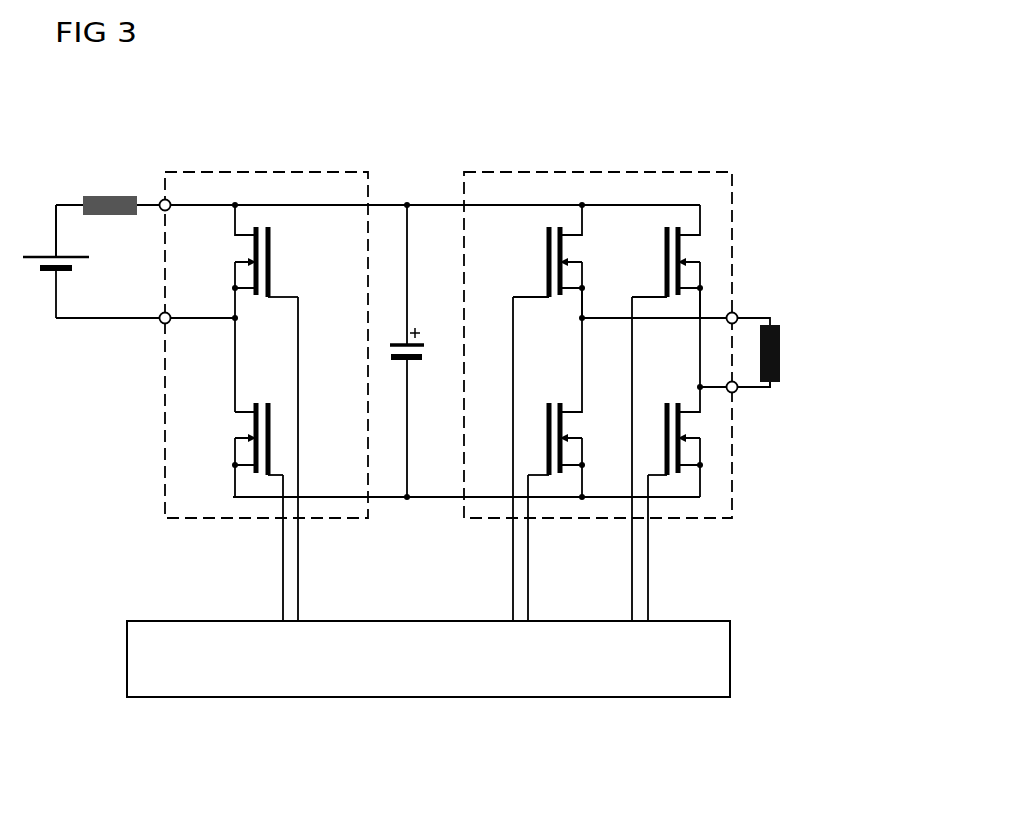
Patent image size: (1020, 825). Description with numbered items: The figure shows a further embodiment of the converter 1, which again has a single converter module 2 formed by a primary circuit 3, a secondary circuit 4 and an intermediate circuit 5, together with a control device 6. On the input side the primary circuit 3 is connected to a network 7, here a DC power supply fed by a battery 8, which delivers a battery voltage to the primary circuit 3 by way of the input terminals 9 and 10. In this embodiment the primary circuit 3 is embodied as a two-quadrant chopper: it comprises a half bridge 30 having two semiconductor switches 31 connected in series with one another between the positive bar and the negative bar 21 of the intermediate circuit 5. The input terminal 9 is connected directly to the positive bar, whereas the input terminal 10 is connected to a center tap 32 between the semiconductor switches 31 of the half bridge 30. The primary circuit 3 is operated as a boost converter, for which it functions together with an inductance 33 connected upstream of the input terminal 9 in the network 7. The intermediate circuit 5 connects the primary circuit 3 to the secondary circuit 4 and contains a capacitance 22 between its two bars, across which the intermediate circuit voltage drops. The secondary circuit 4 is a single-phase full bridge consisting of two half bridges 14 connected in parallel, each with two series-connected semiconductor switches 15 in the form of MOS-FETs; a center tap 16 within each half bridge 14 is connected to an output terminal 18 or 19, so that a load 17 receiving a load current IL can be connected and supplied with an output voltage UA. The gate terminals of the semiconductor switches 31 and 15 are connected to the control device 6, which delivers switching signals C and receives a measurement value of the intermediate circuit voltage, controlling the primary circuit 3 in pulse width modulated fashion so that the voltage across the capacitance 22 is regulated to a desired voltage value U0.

The converter 1 is at (540, 106).
The converter module 2 is at (466, 497).
The primary circuit 3 is at (245, 170).
The secondary circuit 4 is at (625, 170).
The intermediate circuit 5 is at (383, 203).
The control device 6 is at (618, 698).
The network 7 is at (72, 203).
The battery 8 is at (45, 255).
The input terminal 9 is at (160, 201).
The input terminal 10 is at (160, 323).
The half bridge 14 is at (584, 305).
The semiconductor switch 15 is at (548, 254).
The center tap 16 is at (578, 318).
The load 17 is at (782, 355).
The output terminal 18 is at (738, 318).
The output terminal 19 is at (736, 393).
The negative bar 21 is at (388, 499).
The capacitance 22 is at (425, 344).
The half bridge 30 is at (237, 312).
The semiconductor switch 31 is at (272, 252).
The center tap 32 is at (238, 322).
The inductance 33 is at (113, 195).
The switching signals C is at (283, 605).
The output voltage UA is at (768, 318).
The desired voltage value U0 is at (415, 698).
The load current IL is at (762, 392).